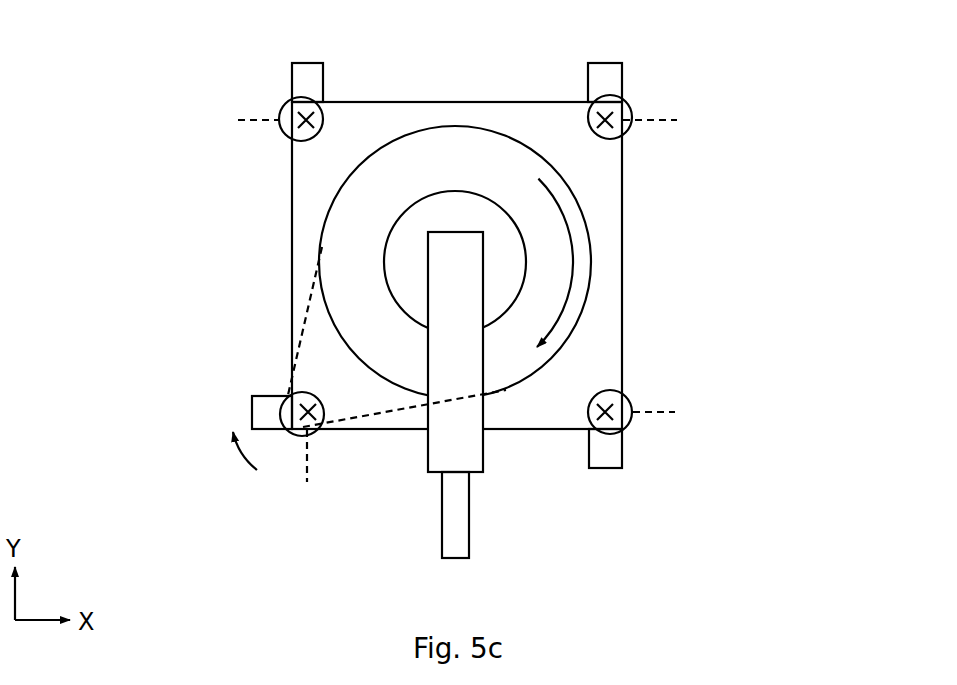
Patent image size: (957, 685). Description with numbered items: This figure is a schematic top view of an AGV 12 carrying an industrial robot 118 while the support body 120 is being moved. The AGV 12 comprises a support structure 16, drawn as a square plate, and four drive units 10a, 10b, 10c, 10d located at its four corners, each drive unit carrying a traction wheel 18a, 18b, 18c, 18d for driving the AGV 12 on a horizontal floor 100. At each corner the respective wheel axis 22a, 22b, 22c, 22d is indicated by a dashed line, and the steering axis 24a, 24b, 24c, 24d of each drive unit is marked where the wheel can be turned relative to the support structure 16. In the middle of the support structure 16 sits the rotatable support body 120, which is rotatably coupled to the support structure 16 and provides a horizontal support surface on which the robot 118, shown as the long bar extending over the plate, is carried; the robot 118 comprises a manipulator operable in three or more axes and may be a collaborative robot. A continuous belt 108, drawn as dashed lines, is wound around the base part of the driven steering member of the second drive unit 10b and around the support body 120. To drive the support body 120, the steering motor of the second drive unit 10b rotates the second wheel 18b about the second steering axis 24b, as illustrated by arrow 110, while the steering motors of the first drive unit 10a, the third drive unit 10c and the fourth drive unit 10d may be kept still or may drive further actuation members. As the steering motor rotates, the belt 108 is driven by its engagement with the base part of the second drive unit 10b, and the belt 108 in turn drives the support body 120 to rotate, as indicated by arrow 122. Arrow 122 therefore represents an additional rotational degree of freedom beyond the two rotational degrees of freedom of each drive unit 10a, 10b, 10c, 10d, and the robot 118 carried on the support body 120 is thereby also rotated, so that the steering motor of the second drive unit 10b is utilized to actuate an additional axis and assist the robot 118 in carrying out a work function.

The AGV 12 is at (371, 222).
The first drive unit 10a is at (630, 418).
The second drive unit 10b is at (262, 410).
The third drive unit 10c is at (285, 115).
The fourth drive unit 10d is at (630, 115).
The support structure 16 is at (378, 138).
The first wheel 18a is at (605, 452).
The second wheel 18b is at (257, 413).
The third wheel 18c is at (308, 80).
The fourth wheel 18d is at (605, 80).
The first wheel axis 22a is at (658, 412).
The second wheel axis 22b is at (308, 445).
The third wheel axis 22c is at (258, 120).
The fourth wheel axis 22d is at (657, 123).
The first steering axis 24a is at (623, 392).
The second steering axis 24b is at (287, 393).
The third steering axis 24c is at (292, 142).
The fourth steering axis 24d is at (625, 140).
The floor 100 is at (862, 304).
The belt 108 is at (305, 310).
The arrow 110 is at (230, 465).
The industrial robot 118 is at (477, 284).
The support body 120 is at (480, 173).
The arrow 122 is at (575, 262).